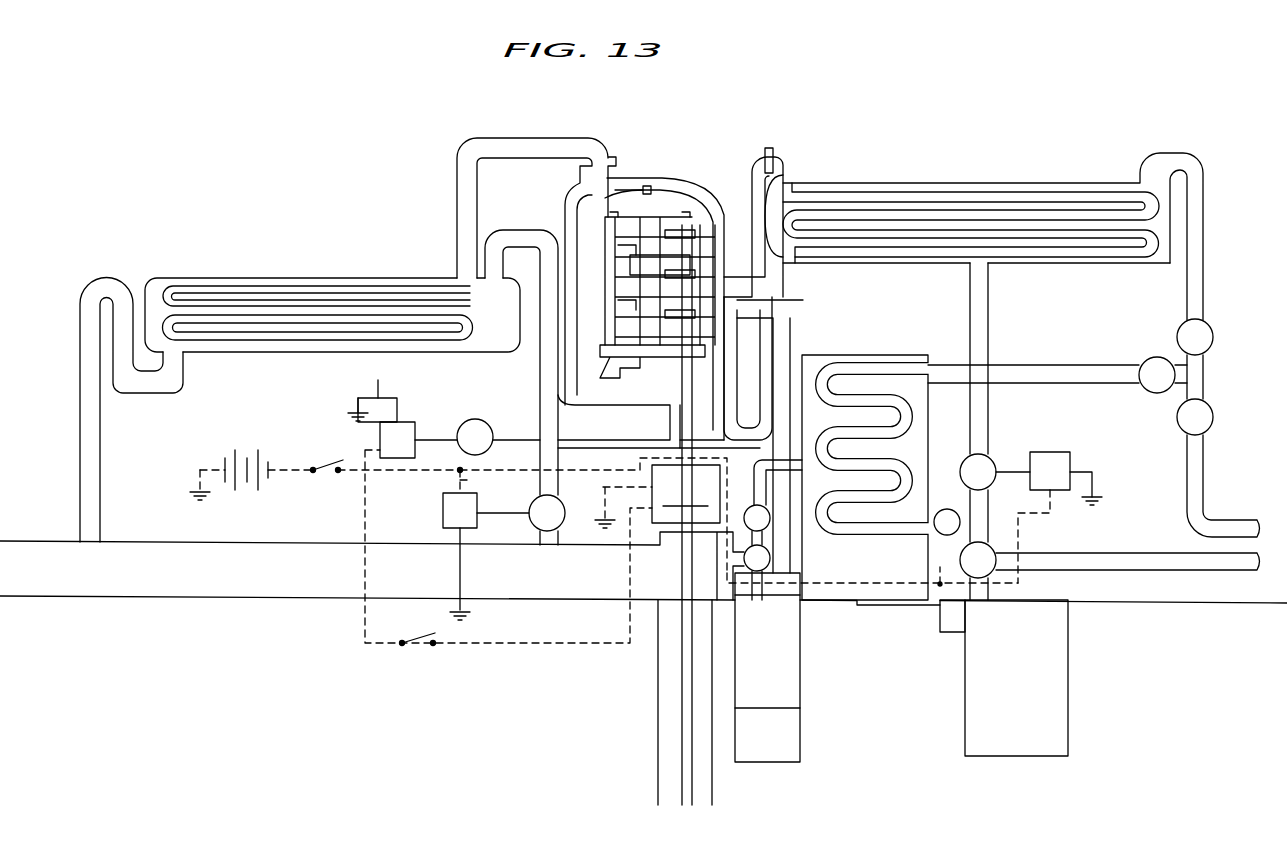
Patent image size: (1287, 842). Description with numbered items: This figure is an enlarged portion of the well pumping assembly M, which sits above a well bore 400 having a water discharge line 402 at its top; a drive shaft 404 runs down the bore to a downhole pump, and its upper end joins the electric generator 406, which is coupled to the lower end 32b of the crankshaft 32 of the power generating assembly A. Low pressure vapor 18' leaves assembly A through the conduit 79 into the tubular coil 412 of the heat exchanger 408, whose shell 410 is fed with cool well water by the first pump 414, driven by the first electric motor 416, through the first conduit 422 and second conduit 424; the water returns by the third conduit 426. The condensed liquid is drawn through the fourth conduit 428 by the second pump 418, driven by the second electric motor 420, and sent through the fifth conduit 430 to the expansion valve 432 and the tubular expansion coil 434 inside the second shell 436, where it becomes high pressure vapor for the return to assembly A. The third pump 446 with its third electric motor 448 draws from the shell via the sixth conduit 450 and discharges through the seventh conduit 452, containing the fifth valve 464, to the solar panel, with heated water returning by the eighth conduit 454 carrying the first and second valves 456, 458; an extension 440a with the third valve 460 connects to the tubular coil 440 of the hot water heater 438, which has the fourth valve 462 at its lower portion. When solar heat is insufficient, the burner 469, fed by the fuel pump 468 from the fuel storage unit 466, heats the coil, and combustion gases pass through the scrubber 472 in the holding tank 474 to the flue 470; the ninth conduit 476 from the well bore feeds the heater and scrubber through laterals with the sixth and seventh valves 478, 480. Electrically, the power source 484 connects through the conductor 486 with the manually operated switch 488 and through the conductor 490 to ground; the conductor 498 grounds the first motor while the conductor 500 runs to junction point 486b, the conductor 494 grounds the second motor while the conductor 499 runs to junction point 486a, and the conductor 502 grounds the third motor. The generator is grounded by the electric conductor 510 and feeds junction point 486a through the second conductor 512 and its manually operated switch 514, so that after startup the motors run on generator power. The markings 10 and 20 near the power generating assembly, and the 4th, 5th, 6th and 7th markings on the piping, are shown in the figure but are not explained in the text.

The fourth heat exchange coil 4th is at (163, 278).
The heat exchanger 408 is at (333, 278).
The confined space defining shell 410 is at (210, 286).
The tubular coil 412 is at (268, 315).
The third conduit 426 is at (186, 376).
The conduit 79 is at (457, 206).
The low pressure vapor 18' is at (562, 114).
The power generating assembly A is at (678, 178).
The apparatus 10 is at (647, 176).
The crankshaft 32 is at (692, 228).
The well bore 400 is at (660, 695).
The drive shaft 404 is at (682, 744).
The second conduit 424 is at (560, 412).
The fifth conduit 430 is at (585, 444).
The lower end of crankshaft 32b is at (700, 440).
The sixth heat exchange coil 6th is at (770, 135).
The expansion valve 432 is at (775, 155).
The tubular expansion coil 434 is at (790, 176).
The second confined space defining shell 436 is at (972, 183).
The seventh coil 7th is at (1050, 183).
The conduit 20 is at (785, 310).
The flue 470 is at (790, 348).
The hot water heater 438 is at (875, 355).
The tubular coil 440 is at (920, 362).
The extension of tubular coil 440a is at (1068, 375).
The seventh valve 480 is at (768, 512).
The sixth valve 478 is at (770, 556).
The fourth valve 462 is at (940, 535).
The sixth conduit 450 is at (992, 324).
The third valve 460 is at (1150, 392).
The second valve 458 is at (1178, 330).
The first valve 456 is at (1206, 426).
The eighth conduit 454 is at (1205, 300).
The third pump 446 is at (992, 458).
The third electric motor 448 is at (1068, 455).
The conductor 502 is at (1092, 476).
The seventh conduit 452 is at (1095, 560).
The fifth valve 464 is at (986, 588).
The conductor 486 is at (1018, 586).
The ninth conduit 476 is at (717, 550).
The water discharge line 402 is at (268, 598).
The holding tank 474 is at (802, 668).
The scrubber 472 is at (778, 600).
The burner 469 is at (865, 605).
The fuel pump 468 is at (950, 632).
The fuel storage unit 466 is at (1068, 684).
The independent source of electric power 484 is at (255, 450).
The conductor 490 is at (200, 466).
The manually operated switch 488 is at (330, 475).
The junction point 486a is at (365, 480).
The junction point 486b is at (465, 470).
The conductor 499 is at (365, 450).
The conductor 494 is at (378, 398).
The second electric motor 420 is at (425, 420).
The fourth conduit 428 is at (467, 380).
The second pump 418 is at (486, 434).
The fifth node 5th is at (460, 470).
The conductor 500 is at (468, 486).
The first electric motor 416 is at (443, 513).
The first pump 414 is at (532, 525).
The first conduit 422 is at (547, 550).
The electric conductor 510 is at (612, 490).
The conductor 498 is at (460, 560).
The electric generator 406 is at (686, 494).
The manually operated switch 514 is at (415, 648).
The second conductor 512 is at (515, 643).
The well pumping assembly M is at (425, 245).